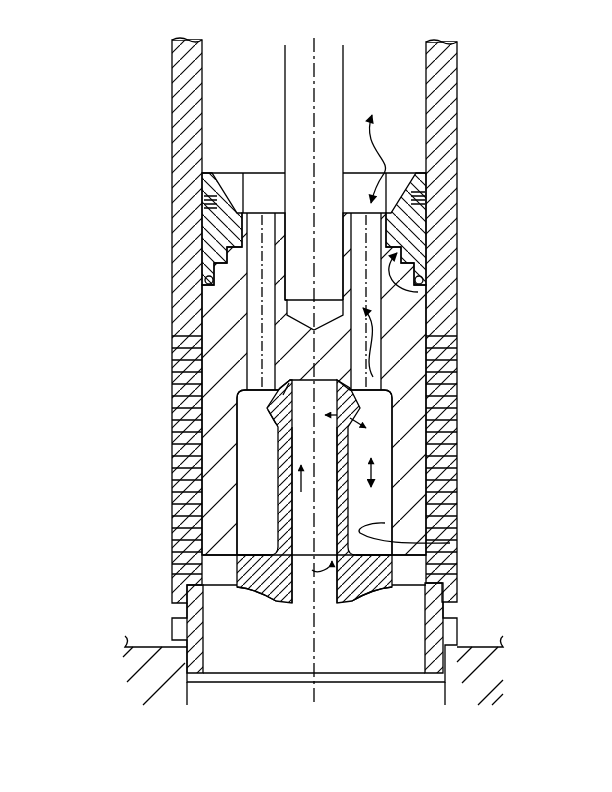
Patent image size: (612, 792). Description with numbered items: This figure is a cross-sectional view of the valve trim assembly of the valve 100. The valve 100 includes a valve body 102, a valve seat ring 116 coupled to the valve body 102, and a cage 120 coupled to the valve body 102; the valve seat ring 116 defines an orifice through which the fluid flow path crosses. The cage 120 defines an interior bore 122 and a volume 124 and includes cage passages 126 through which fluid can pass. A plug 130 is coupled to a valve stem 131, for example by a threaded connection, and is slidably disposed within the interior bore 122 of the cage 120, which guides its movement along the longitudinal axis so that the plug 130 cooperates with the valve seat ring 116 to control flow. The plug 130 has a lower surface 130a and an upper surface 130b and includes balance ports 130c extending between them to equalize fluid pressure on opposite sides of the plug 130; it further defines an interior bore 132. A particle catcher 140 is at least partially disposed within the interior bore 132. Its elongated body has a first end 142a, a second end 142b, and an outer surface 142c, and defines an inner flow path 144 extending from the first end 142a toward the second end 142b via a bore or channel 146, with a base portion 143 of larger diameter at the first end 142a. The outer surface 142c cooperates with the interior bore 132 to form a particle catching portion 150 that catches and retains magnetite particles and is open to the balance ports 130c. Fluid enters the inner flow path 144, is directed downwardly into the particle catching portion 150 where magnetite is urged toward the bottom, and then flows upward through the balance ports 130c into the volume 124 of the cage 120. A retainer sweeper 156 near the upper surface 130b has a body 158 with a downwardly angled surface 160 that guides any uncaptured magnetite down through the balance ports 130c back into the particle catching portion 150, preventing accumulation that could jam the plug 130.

The valve 100 is at (124, 72).
The valve body 102 is at (490, 678).
The valve seat ring 116 is at (445, 637).
The cage 120 is at (458, 233).
The interior bore 122 is at (424, 62).
The volume 124 is at (260, 106).
The cage passages 126 is at (457, 508).
The plug 130 is at (311, 421).
The lower surface 130a is at (221, 591).
The upper surface 130b is at (425, 283).
The balance ports 130c is at (372, 330).
The valve stem 131 is at (335, 87).
The interior bore 132 is at (386, 523).
The particle catcher 140 is at (320, 525).
The first end 142a is at (265, 588).
The second end 142b is at (283, 397).
The outer surface 142c is at (270, 420).
The base portion 143 is at (237, 570).
The inner flow path 144 is at (325, 588).
The bore or channel 146 is at (380, 587).
The particle catching portion 150 is at (250, 470).
The retainer sweeper 156 is at (410, 228).
The body 158 is at (220, 222).
The downwardly angled surface 160 is at (400, 186).